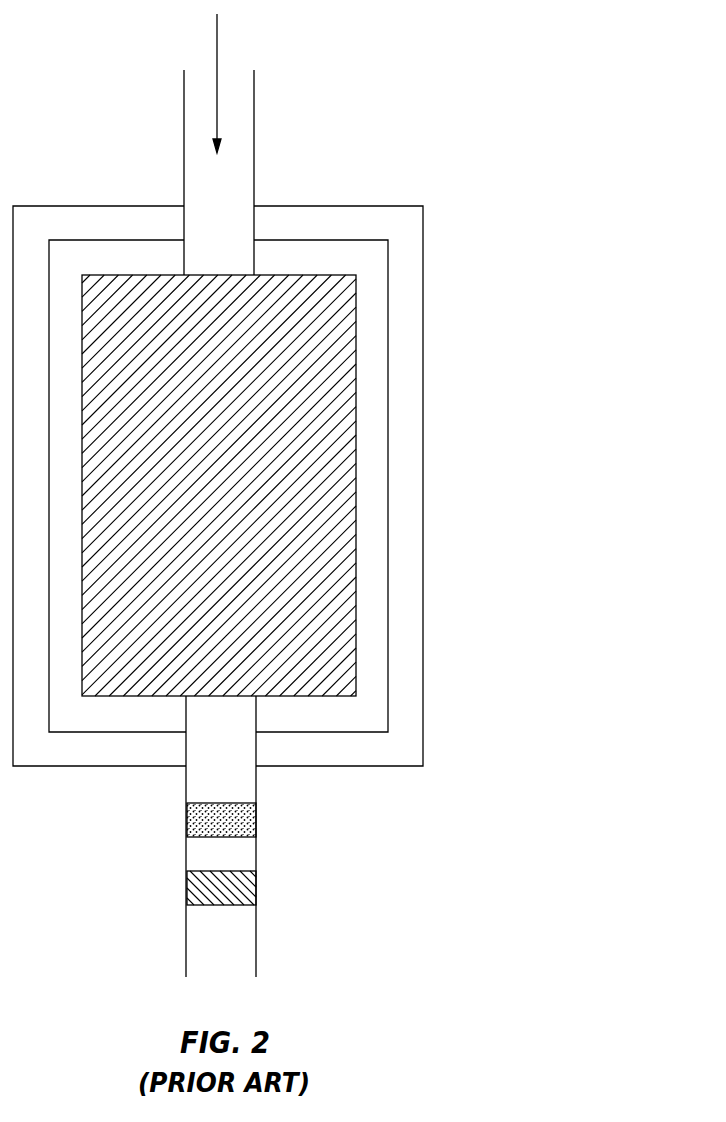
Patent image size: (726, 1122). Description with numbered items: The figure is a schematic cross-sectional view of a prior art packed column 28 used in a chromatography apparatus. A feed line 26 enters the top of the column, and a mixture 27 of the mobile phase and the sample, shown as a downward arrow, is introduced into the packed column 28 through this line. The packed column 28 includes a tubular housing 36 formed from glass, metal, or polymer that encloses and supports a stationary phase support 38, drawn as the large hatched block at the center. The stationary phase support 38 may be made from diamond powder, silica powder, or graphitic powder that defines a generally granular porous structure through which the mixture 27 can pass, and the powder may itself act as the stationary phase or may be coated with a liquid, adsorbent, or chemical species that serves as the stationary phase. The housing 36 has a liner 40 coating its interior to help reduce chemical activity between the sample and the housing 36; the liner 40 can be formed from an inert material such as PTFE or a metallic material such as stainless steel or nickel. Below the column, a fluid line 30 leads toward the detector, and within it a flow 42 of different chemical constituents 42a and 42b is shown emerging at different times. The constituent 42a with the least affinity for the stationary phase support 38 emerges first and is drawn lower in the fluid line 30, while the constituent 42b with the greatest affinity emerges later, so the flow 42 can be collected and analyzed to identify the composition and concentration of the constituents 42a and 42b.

The feed line 26 is at (254, 133).
The mixture 27 is at (216, 40).
The packed column 28 is at (550, 195).
The fluid line 30 is at (256, 949).
The tubular housing 36 is at (413, 345).
The stationary phase support 38 is at (240, 488).
The liner 40 is at (377, 458).
The flow 42 is at (305, 853).
The constituent 42a is at (220, 871).
The constituent 42b is at (206, 806).